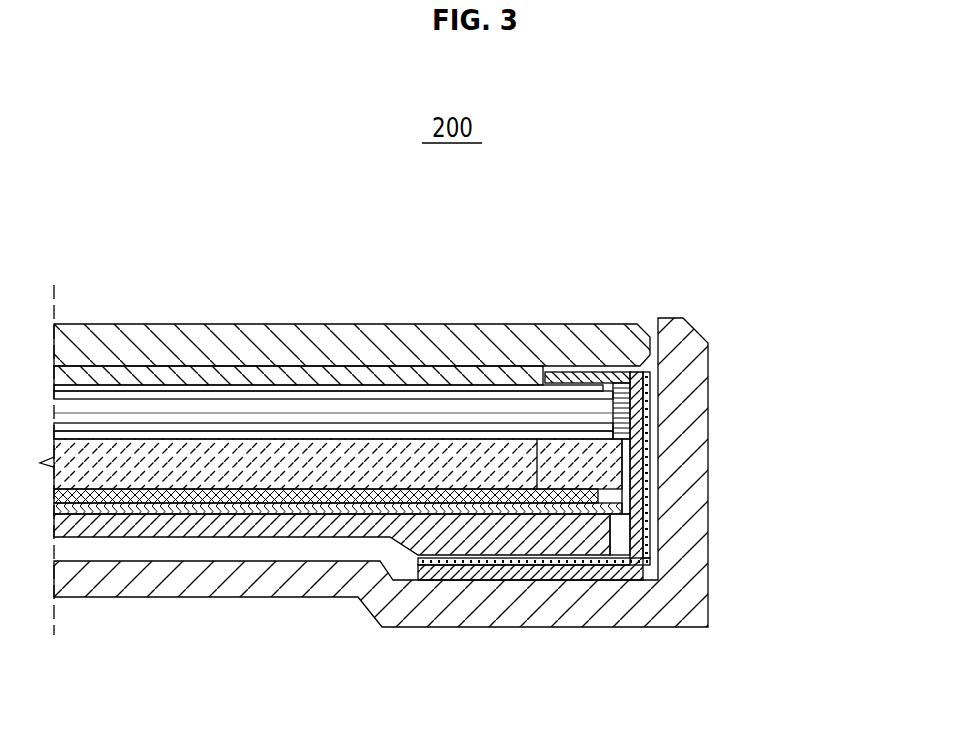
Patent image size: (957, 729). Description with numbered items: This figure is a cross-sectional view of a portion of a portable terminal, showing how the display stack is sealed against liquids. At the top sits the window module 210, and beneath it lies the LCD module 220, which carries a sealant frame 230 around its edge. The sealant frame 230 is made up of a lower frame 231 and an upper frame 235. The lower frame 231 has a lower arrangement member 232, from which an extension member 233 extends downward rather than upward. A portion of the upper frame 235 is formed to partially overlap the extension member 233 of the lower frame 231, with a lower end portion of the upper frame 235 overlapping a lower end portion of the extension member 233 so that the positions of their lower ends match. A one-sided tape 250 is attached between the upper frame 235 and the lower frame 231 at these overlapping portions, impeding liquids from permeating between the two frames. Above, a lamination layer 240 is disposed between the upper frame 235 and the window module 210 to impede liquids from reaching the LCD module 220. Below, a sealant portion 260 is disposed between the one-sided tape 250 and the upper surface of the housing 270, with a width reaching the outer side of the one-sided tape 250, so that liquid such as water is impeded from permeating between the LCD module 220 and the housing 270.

The window module 210 is at (126, 318).
The LCD module 220 is at (283, 376).
The sealant frame 230 is at (471, 476).
The lower frame 231 is at (437, 476).
The lower arrangement member 232 is at (557, 503).
The extension member 233 is at (632, 520).
The upper frame 235 is at (635, 428).
The lamination layer 240 is at (215, 372).
The one-sided tape 250 is at (650, 548).
The sealant portion 260 is at (578, 573).
The housing 270 is at (448, 512).